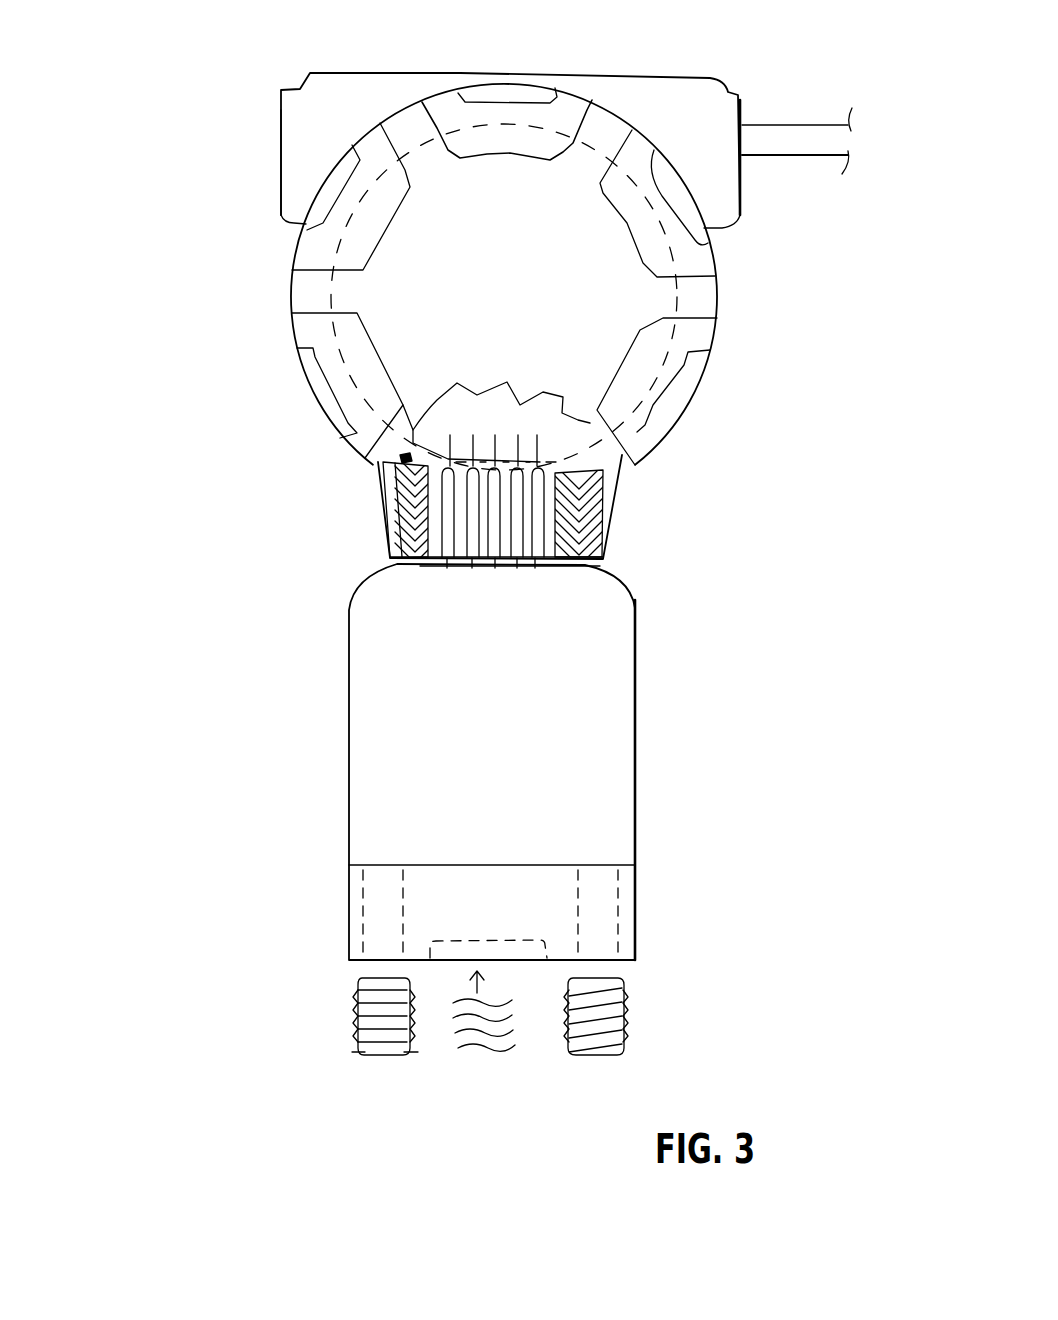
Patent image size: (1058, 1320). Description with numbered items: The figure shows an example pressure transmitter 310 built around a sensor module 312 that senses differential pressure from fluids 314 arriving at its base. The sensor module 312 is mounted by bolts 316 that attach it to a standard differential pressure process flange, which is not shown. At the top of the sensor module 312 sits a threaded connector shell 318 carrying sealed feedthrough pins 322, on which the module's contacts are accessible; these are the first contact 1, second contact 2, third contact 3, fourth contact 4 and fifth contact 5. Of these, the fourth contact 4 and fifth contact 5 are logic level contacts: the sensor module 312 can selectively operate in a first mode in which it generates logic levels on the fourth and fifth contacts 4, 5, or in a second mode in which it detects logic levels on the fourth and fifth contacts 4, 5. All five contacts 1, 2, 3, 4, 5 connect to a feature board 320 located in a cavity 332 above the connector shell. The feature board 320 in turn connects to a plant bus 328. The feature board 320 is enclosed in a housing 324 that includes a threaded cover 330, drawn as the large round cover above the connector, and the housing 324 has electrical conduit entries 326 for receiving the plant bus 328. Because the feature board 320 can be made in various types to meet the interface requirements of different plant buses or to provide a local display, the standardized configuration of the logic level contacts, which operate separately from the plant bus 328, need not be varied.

The pressure transmitter 310 is at (149, 437).
The sensor module 312 is at (349, 742).
The fluids 314 is at (483, 1057).
The bolts 316 is at (357, 1012).
The threaded connector shell 318 is at (613, 508).
The feature board 320 is at (545, 456).
The sealed feedthrough pins 322 is at (470, 506).
The housing 324 is at (460, 6).
The electrical conduit entries 326 is at (281, 110).
The plant bus 328 is at (788, 156).
The threaded cover 330 is at (528, 288).
The cavity 332 is at (404, 458).
The contact 5' 5 is at (447, 567).
The contact 4' 4 is at (472, 567).
The contact 2' 2 is at (495, 567).
The contact 3' 3 is at (517, 567).
The contact 1' 1 is at (535, 567).